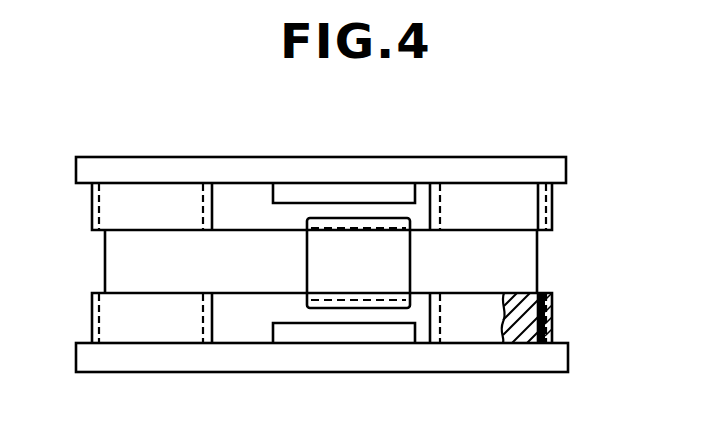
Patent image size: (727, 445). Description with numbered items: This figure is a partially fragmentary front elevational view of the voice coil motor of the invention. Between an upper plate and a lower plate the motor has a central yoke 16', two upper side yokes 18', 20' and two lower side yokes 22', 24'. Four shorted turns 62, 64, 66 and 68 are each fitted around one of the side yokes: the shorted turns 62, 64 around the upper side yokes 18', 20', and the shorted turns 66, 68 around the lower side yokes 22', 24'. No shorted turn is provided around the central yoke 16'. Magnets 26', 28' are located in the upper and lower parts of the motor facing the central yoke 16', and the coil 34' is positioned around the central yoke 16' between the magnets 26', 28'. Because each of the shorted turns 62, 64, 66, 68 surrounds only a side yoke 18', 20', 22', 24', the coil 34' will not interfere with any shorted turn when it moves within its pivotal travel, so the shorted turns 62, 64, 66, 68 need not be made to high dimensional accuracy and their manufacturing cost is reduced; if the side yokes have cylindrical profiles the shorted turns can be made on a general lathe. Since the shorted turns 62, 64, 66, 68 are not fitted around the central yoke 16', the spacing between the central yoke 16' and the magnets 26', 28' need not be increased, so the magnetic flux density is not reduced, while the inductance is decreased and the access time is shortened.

The central yoke 16' is at (365, 261).
The upper side yoke 18' is at (489, 162).
The upper side yoke 20' is at (153, 162).
The lower side yoke 22' is at (512, 357).
The lower side yoke 24' is at (153, 357).
The magnet 26' is at (344, 148).
The magnet 28' is at (338, 372).
The coil 34' is at (360, 320).
The shorted turn 62 is at (552, 202).
The shorted turn 64 is at (92, 206).
The shorted turn 66 is at (552, 315).
The shorted turn 68 is at (92, 325).